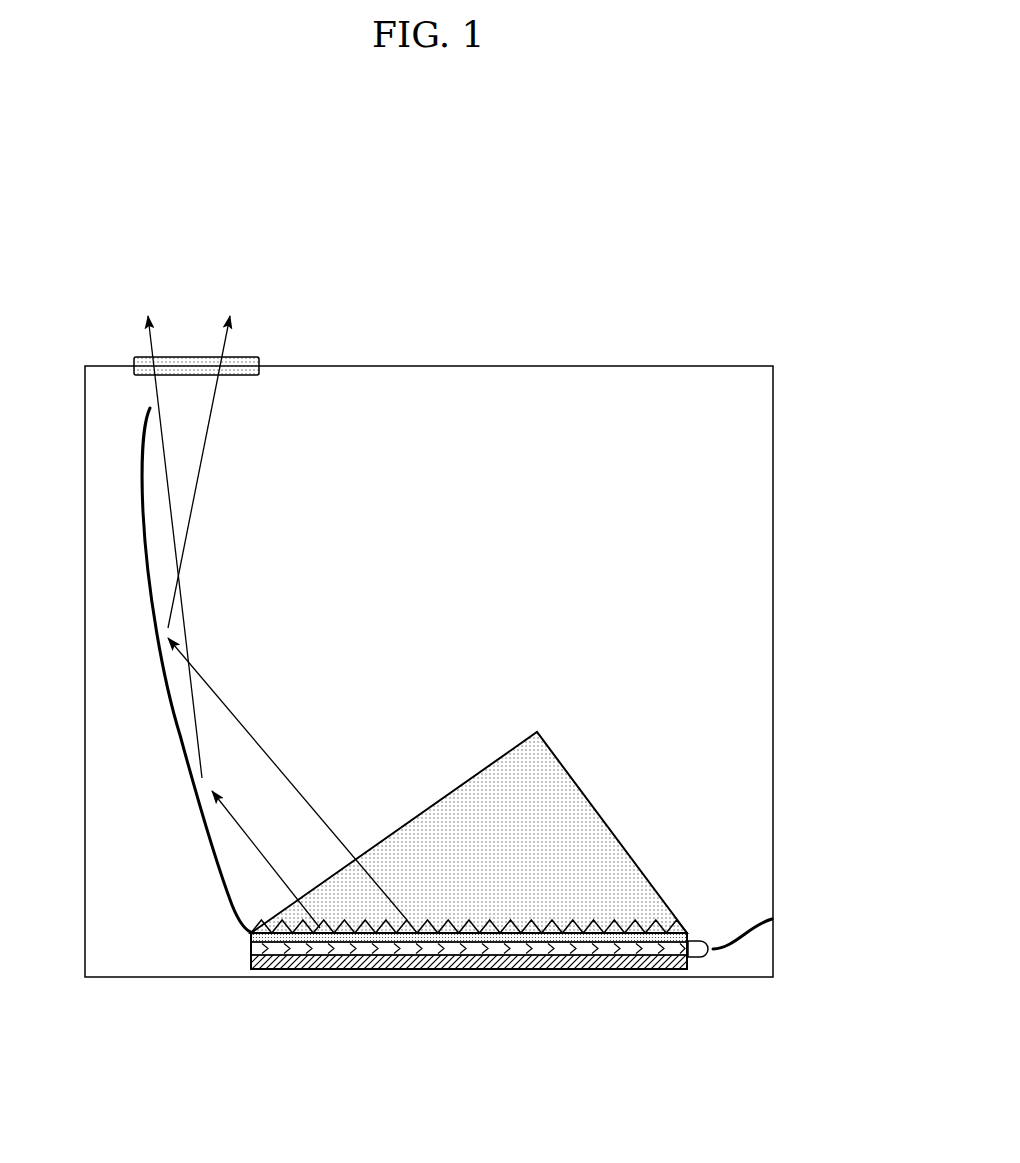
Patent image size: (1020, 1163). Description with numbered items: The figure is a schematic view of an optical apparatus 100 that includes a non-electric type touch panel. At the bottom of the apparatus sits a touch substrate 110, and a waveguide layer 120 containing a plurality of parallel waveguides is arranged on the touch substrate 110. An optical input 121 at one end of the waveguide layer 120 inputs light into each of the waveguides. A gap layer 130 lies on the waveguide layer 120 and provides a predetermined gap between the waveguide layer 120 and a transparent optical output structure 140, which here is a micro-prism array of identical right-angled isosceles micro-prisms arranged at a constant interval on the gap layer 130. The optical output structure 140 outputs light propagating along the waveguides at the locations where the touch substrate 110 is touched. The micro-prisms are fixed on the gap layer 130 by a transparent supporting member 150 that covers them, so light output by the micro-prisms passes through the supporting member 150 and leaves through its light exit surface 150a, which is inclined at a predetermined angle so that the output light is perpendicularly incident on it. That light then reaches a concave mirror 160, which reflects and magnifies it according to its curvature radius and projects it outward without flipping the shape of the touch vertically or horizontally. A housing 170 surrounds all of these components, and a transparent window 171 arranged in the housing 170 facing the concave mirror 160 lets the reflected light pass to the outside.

The optical apparatus 100 is at (786, 694).
The touch substrate 110 is at (595, 960).
The waveguide layer 120 is at (463, 947).
The optical input 121 is at (697, 958).
The gap layer 130 is at (338, 938).
The transparent optical output structure 140 is at (665, 926).
The transparent supporting member 150 is at (492, 818).
The light exit surface 150a is at (478, 772).
The concave mirror 160 is at (143, 512).
The housing 170 is at (773, 553).
The transparent window 171 is at (234, 355).